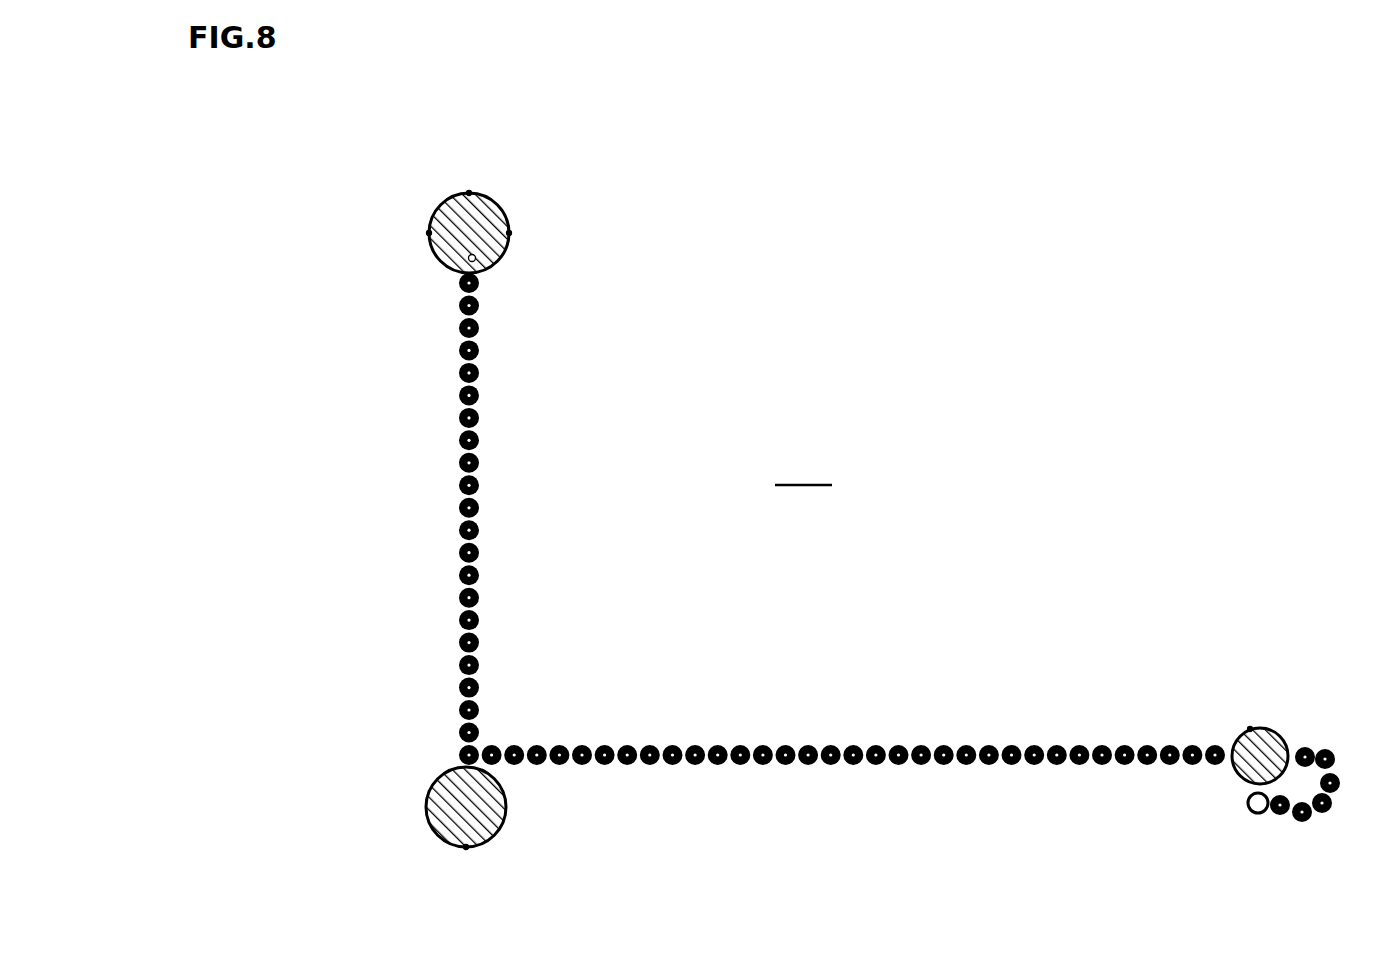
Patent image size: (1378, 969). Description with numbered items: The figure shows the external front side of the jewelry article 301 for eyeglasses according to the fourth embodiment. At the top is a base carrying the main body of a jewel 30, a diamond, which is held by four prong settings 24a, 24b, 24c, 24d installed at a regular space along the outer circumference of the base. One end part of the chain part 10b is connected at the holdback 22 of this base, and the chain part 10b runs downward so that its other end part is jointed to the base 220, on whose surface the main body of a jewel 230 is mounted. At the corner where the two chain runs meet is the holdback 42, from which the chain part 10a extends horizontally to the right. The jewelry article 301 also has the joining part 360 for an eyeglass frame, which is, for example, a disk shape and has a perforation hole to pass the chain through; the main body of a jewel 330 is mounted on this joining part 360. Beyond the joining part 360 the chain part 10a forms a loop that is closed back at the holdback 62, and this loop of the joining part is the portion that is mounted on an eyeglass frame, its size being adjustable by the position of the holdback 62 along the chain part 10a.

The jewelry article 301 is at (803, 470).
The main body of a jewel 30 is at (495, 208).
The prong setting 24a is at (475, 261).
The prong setting 24b is at (509, 233).
The prong setting 24c is at (469, 193).
The prong setting 24d is at (429, 233).
The holdback 22 is at (467, 277).
The chain part 10b is at (479, 462).
The chain part 10a is at (786, 745).
The holdback 42 is at (461, 752).
The main body of a jewel 230 is at (506, 808).
The base 220 is at (466, 847).
The joining part for an eyeglass frame 360 is at (1277, 731).
The main body of a jewel 330 is at (1250, 729).
The holdback 62 is at (1250, 808).